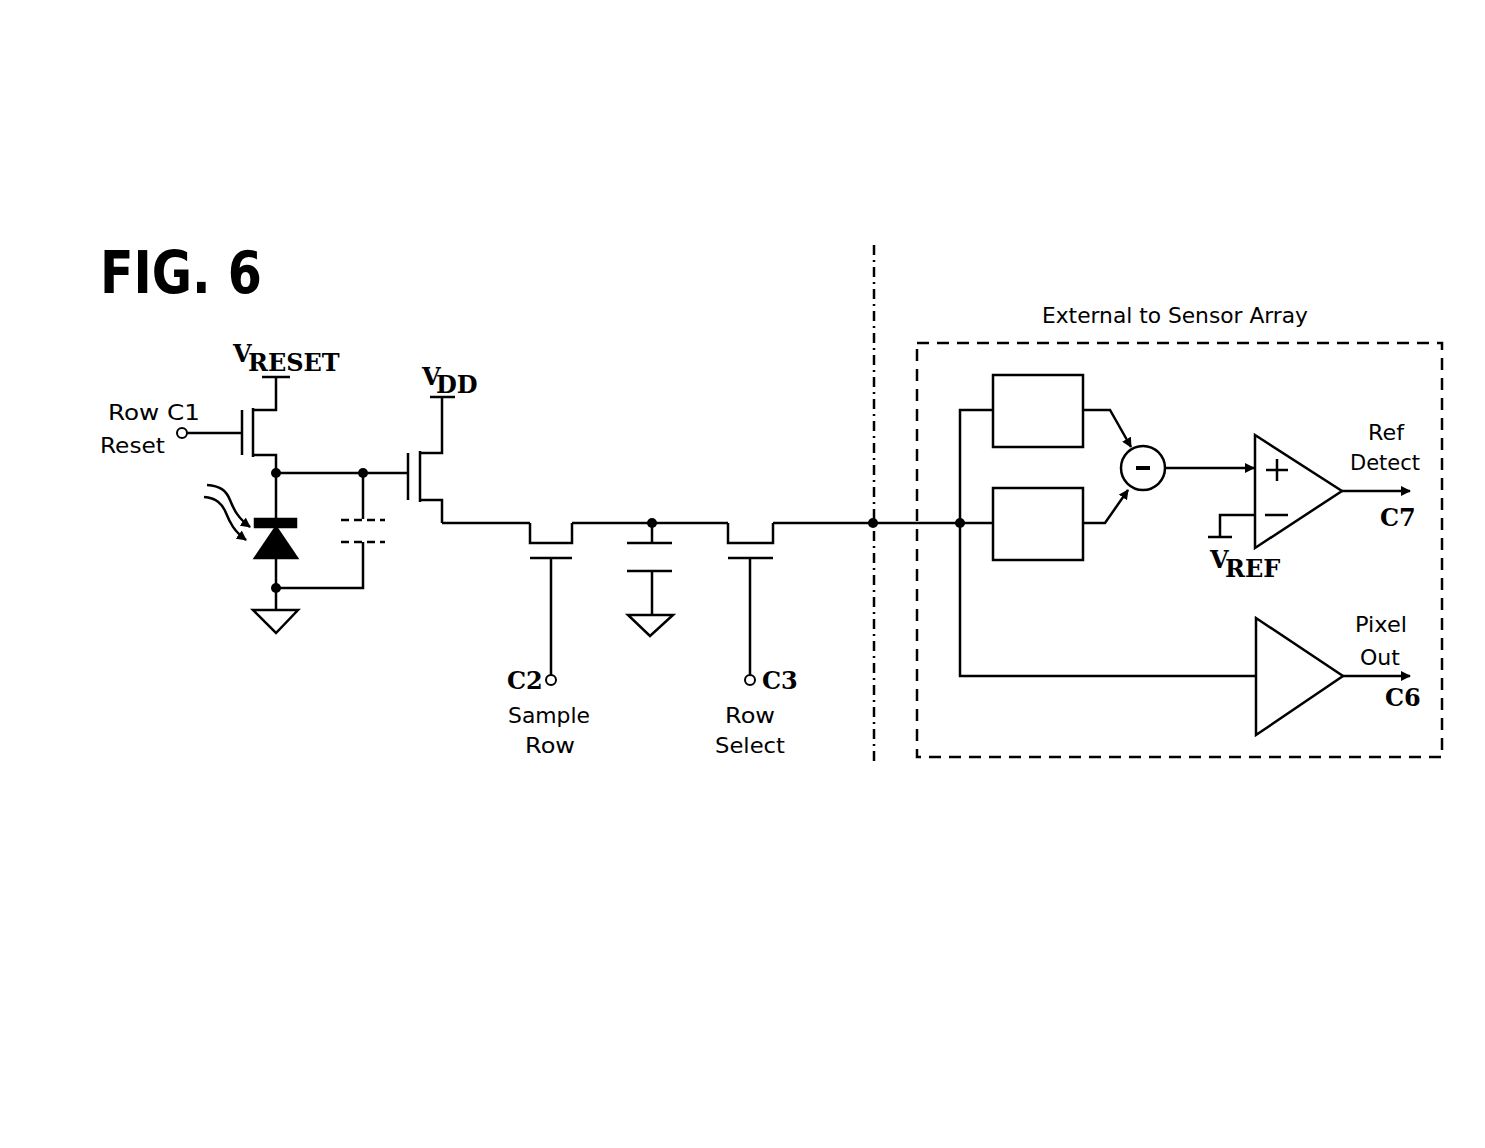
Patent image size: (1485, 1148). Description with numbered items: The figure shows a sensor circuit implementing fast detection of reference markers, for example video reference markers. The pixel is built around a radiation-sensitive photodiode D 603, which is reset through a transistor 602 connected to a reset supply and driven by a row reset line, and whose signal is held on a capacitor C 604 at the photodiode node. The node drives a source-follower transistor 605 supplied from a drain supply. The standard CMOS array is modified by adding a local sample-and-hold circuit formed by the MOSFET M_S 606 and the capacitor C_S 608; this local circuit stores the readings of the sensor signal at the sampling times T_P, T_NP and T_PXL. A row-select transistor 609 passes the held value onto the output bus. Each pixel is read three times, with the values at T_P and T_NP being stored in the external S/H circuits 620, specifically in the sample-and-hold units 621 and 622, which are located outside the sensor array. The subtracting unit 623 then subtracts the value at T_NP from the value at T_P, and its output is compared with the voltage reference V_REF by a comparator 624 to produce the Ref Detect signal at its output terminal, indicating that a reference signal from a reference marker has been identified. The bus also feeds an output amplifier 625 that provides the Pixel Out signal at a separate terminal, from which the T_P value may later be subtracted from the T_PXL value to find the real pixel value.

The reset transistor M1 602 is at (298, 406).
The photodiode D 603 is at (249, 550).
The capacitor C 604 is at (366, 543).
The source follower transistor M2 605 is at (447, 458).
The MOSFET M_S 606 is at (584, 497).
The capacitor C_S 608 is at (639, 577).
The row select transistor M3 609 is at (793, 497).
The external S/H circuits 620 is at (950, 343).
The sample-and-hold unit 621 is at (1090, 389).
The sample-and-hold unit 622 is at (1043, 566).
The subtracting unit 623 is at (1163, 452).
The reference detect comparator 624 is at (1301, 435).
The pixel output amplifier 625 is at (1306, 615).